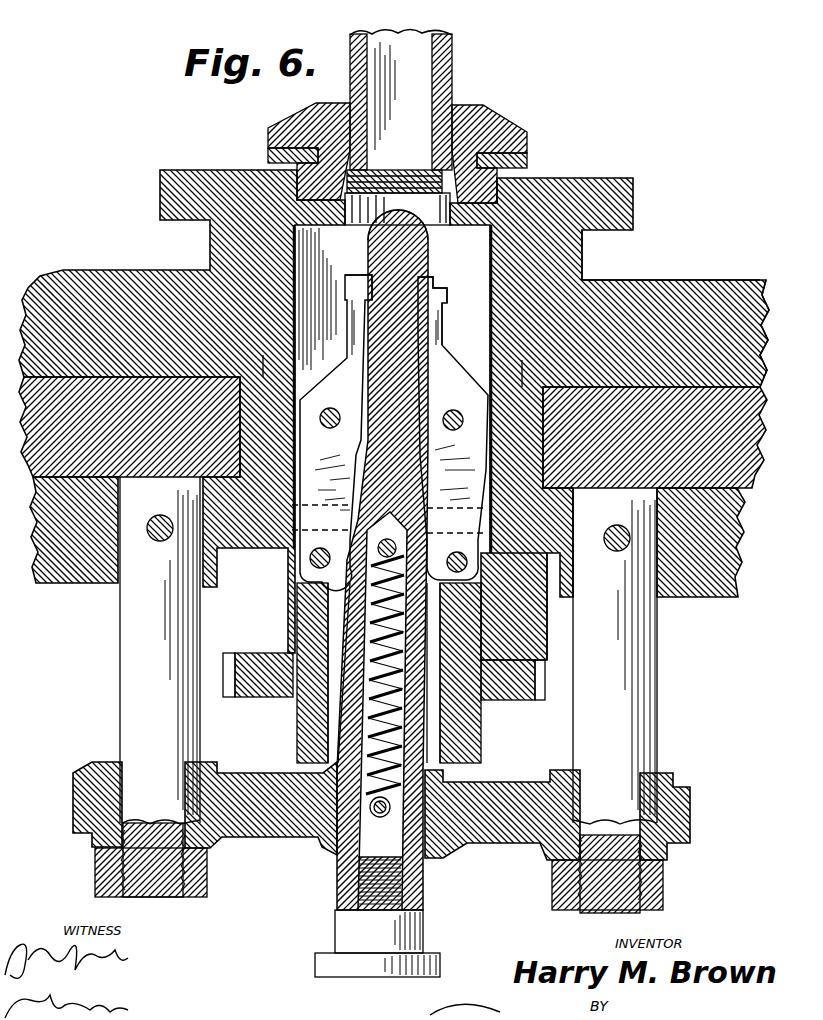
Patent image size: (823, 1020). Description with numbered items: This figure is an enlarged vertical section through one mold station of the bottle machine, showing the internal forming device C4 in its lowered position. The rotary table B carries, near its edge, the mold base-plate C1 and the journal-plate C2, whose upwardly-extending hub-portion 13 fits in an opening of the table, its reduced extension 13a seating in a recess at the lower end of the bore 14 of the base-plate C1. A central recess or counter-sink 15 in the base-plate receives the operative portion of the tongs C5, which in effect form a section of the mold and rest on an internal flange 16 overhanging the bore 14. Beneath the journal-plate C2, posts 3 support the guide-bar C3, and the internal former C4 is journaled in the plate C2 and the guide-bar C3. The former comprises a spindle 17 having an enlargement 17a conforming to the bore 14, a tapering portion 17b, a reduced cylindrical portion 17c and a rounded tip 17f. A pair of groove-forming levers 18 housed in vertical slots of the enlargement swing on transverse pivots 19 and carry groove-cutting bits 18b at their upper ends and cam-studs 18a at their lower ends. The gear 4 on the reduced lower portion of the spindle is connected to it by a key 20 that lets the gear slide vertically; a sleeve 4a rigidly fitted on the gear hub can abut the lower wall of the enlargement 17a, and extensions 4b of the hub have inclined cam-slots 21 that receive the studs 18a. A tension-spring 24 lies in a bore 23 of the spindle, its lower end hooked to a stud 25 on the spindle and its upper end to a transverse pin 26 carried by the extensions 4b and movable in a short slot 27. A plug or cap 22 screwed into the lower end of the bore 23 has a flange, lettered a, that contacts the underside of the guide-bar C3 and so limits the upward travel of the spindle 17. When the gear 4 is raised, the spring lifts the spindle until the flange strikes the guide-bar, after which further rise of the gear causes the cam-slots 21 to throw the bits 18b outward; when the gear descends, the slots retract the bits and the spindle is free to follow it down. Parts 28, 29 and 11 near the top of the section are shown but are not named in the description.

The tongs C5 is at (470, 132).
The cap 28 is at (298, 118).
The flange plates 29 is at (270, 154).
The tapering portion 17b is at (215, 268).
The rotary table B is at (397, 480).
The tension-spring 24 is at (320, 705).
The key 20 is at (320, 620).
The top plate 11 is at (630, 212).
The reduced extension 13a is at (671, 267).
The mold base-plate C1 is at (705, 300).
The central recess 15 is at (500, 195).
The bore 14 is at (495, 292).
The hub-portion 13 is at (620, 440).
The journal-plate C2 is at (700, 597).
The enlargement 17a is at (575, 495).
The gear 4 is at (510, 700).
The sleeve 4a is at (472, 638).
The posts 3 is at (388, 650).
The extensions 4b is at (200, 548).
The spindle 17 is at (412, 888).
The rounded tip-portion 17f is at (430, 238).
The reduced cylindrical portion 17c is at (445, 308).
The internal flange 16 is at (305, 235).
The groove-forming levers 18 is at (352, 345).
The internal forming device C4 is at (356, 280).
The groove-cutting bits 18b is at (462, 300).
The pivots 19 is at (322, 415).
The cam-slots 21 is at (310, 553).
The cam-studs 18a is at (300, 588).
The transverse pin 26 is at (360, 520).
The slot 27 is at (420, 515).
The stud 25 is at (420, 782).
The bore 23 is at (330, 855).
The guide-bar C3 is at (520, 840).
The plug 22 is at (335, 930).
The flange a is at (367, 966).